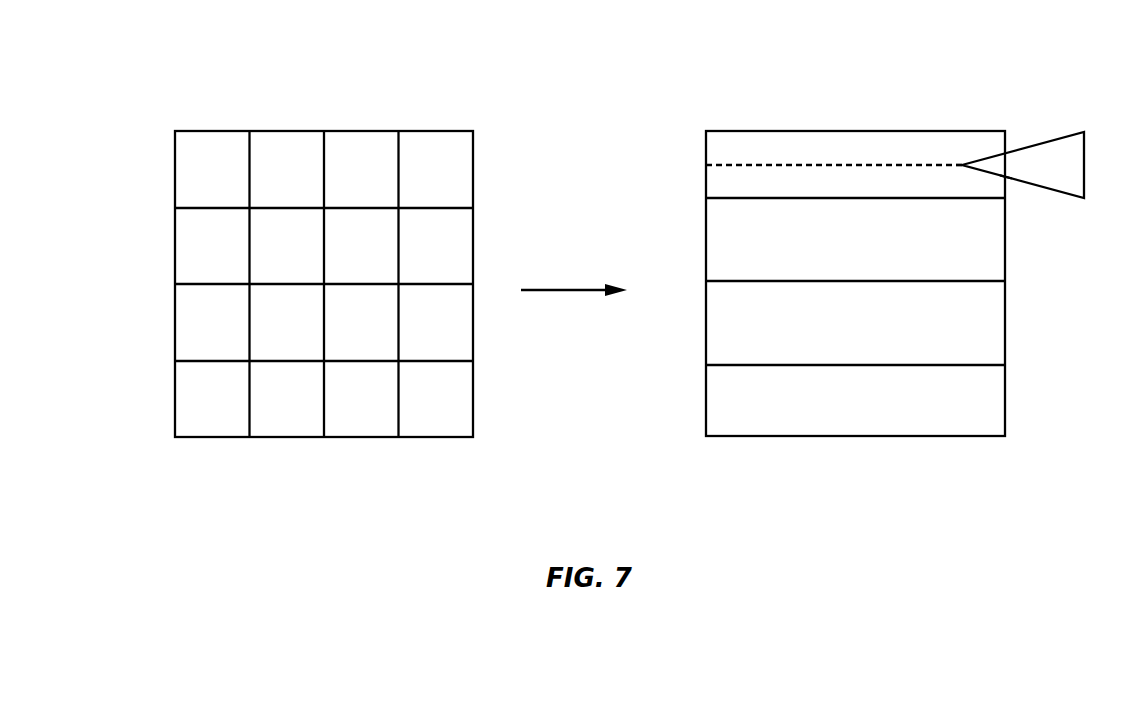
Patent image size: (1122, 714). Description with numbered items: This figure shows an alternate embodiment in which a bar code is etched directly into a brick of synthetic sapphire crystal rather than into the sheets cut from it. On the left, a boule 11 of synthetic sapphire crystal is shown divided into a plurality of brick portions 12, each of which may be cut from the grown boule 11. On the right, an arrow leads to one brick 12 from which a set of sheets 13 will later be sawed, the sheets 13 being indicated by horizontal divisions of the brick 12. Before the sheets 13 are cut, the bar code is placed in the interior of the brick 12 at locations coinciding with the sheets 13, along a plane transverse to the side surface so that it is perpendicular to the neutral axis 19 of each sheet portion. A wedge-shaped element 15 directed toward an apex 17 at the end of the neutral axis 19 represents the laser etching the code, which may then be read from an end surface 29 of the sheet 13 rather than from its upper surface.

The boule 11 is at (148, 246).
The brick portion 12 is at (367, 153).
The sheet 13 is at (720, 190).
The cutting wedge 15 is at (1053, 140).
The cutting apex 17 is at (962, 165).
The neutral axis 19 is at (755, 163).
The end surface 29 is at (1005, 177).